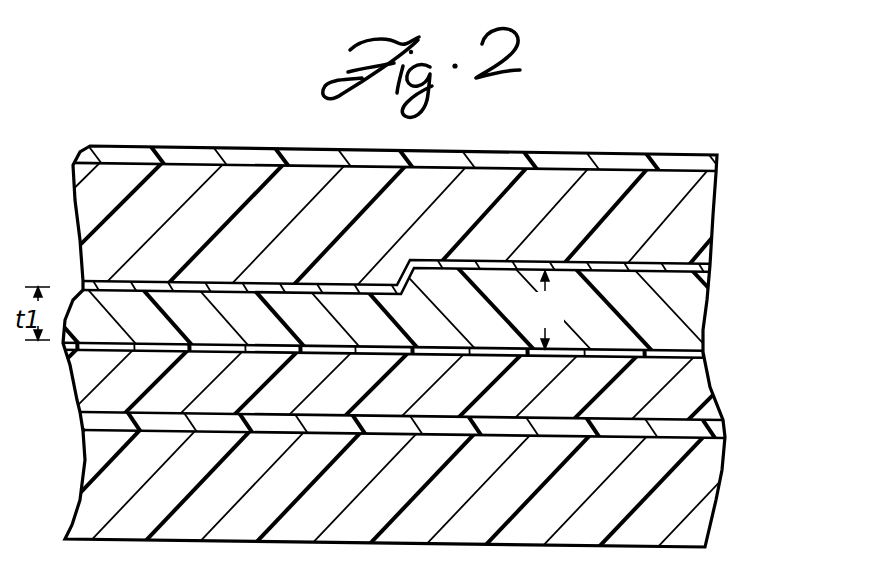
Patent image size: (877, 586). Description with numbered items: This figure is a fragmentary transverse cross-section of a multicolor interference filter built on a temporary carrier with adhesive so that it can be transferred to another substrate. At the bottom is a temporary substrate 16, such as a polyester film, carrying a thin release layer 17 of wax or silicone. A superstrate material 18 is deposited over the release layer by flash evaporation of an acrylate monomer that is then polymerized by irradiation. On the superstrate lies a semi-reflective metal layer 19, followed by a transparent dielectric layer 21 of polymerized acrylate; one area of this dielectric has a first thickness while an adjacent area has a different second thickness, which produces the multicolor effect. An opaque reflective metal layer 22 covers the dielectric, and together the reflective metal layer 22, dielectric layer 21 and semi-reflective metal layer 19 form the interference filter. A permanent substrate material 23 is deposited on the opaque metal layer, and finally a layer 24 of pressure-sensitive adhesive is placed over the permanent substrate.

The temporary substrate 16 is at (722, 480).
The release layer 17 is at (724, 426).
The superstrate material 18 is at (709, 382).
The semi-reflective metal layer 19 is at (703, 342).
The transparent dielectric layer 21 is at (706, 308).
The opaque reflective metal layer 22 is at (710, 265).
The permanent substrate material 23 is at (715, 208).
The pressure-sensitive adhesive layer 24 is at (717, 160).